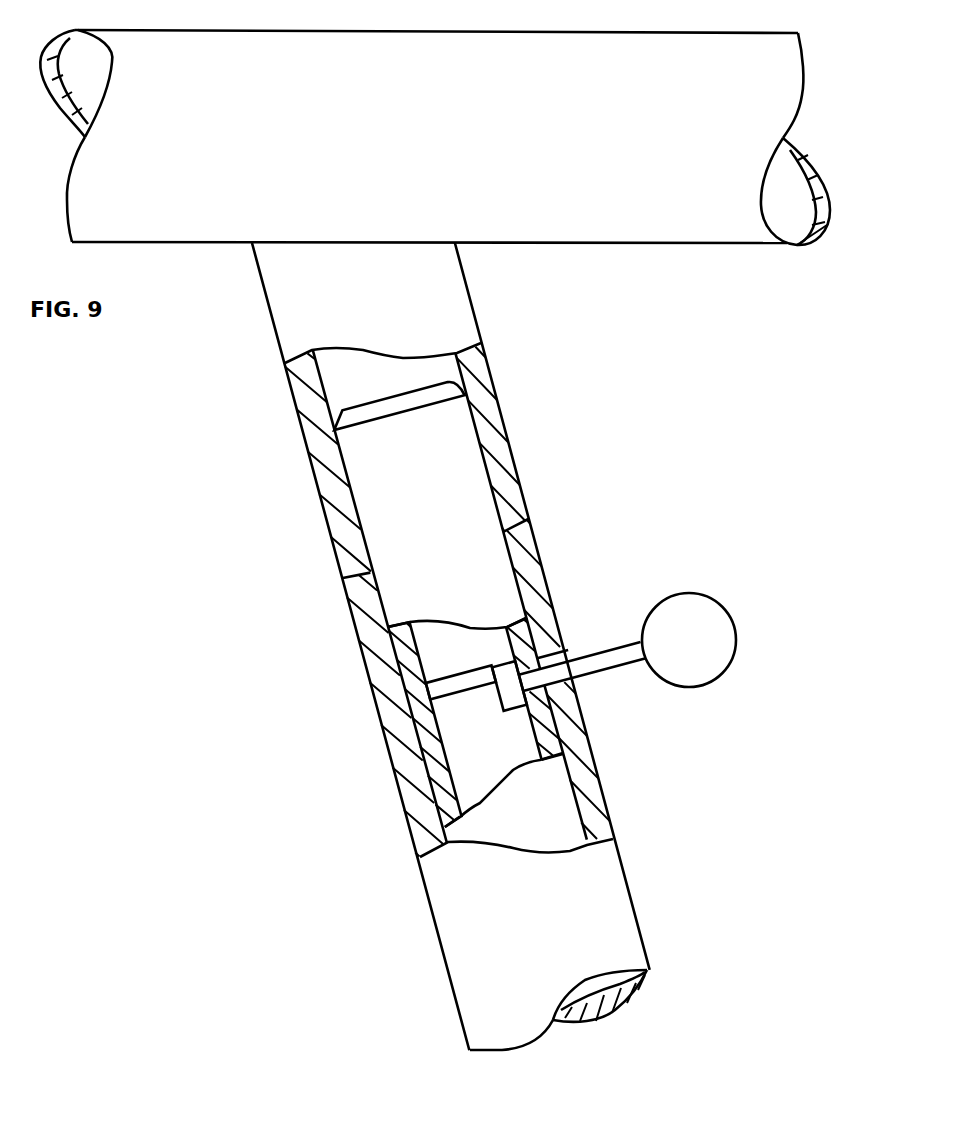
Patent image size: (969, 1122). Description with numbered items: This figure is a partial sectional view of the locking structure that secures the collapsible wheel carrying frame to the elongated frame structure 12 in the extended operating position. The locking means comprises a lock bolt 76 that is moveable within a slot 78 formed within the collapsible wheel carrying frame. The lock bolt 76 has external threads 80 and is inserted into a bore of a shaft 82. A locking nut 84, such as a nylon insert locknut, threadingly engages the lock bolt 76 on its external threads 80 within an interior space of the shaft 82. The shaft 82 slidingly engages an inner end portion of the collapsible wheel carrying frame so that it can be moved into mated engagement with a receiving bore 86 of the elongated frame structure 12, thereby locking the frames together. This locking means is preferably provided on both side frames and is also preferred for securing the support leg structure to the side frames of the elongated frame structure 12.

The elongated frame structure 12 is at (448, 292).
The lock bolt 76 is at (618, 657).
The slot 78 is at (580, 768).
The external threads 80 is at (597, 665).
The shaft 82 is at (462, 487).
The locking nut 84 is at (487, 671).
The receiving bore 86 is at (440, 372).